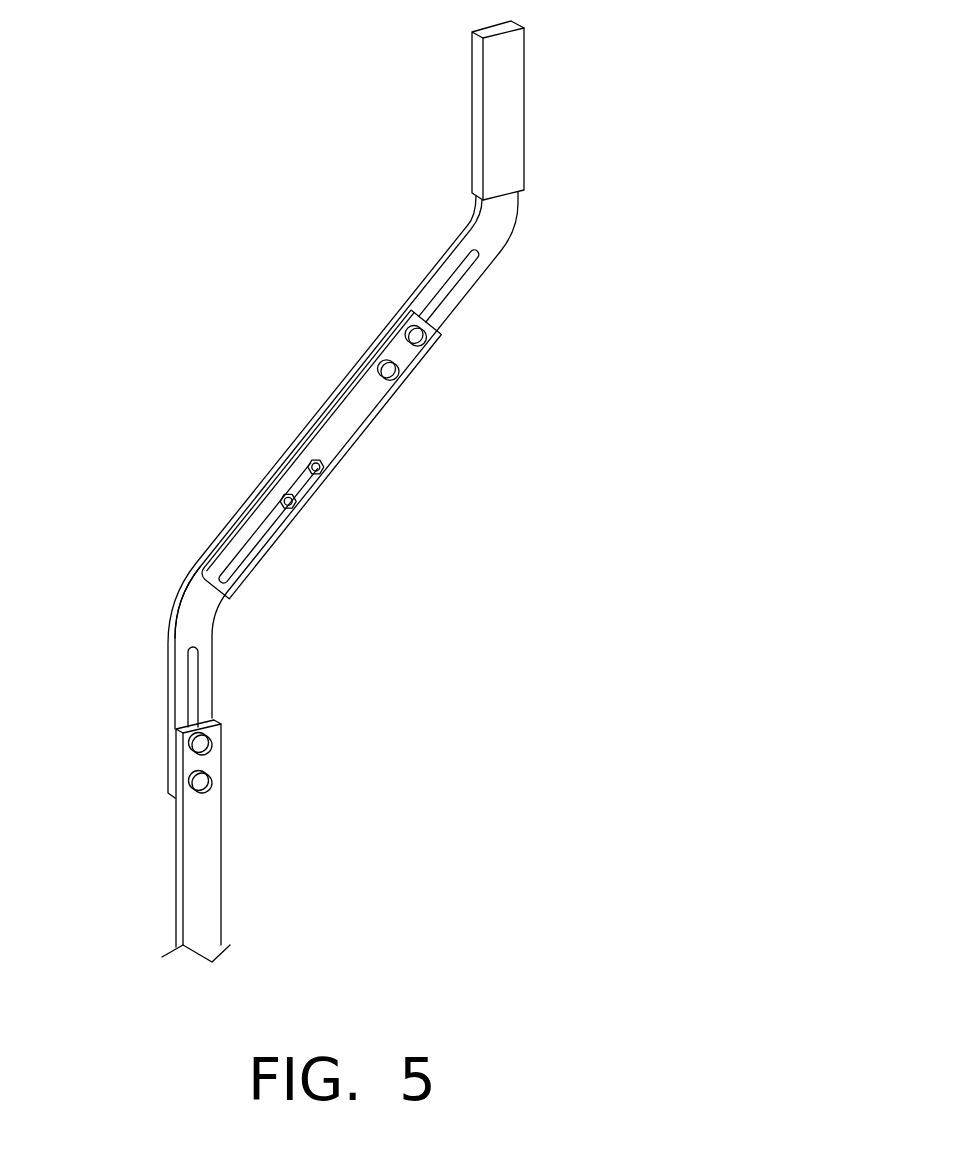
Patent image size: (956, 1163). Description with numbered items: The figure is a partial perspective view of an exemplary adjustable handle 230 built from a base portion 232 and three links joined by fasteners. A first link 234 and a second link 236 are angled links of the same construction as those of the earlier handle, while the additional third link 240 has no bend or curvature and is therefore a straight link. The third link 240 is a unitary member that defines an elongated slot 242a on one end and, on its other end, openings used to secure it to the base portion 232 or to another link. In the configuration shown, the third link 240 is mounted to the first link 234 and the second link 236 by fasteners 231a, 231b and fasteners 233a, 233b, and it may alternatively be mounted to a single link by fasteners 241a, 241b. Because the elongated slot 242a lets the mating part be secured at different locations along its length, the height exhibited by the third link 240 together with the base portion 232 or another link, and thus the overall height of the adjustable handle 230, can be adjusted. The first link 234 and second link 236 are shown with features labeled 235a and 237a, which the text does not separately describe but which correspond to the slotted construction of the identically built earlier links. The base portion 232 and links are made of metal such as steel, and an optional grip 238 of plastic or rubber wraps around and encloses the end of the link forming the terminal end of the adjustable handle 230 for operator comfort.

The adjustable handle 230 is at (228, 311).
The fastener 231a is at (207, 745).
The fastener 231b is at (208, 790).
The base portion 232 is at (222, 900).
The fastener 233a is at (318, 468).
The fastener 233b is at (292, 503).
The first link 234 is at (177, 600).
The lower slot 235a is at (195, 688).
The second link 236 is at (448, 243).
The inclined arm 237a is at (455, 278).
The grip 238 is at (522, 110).
The third link 240 is at (357, 443).
The fastener 241a is at (418, 337).
The fastener 241b is at (390, 370).
The elongated slot 242a is at (238, 577).